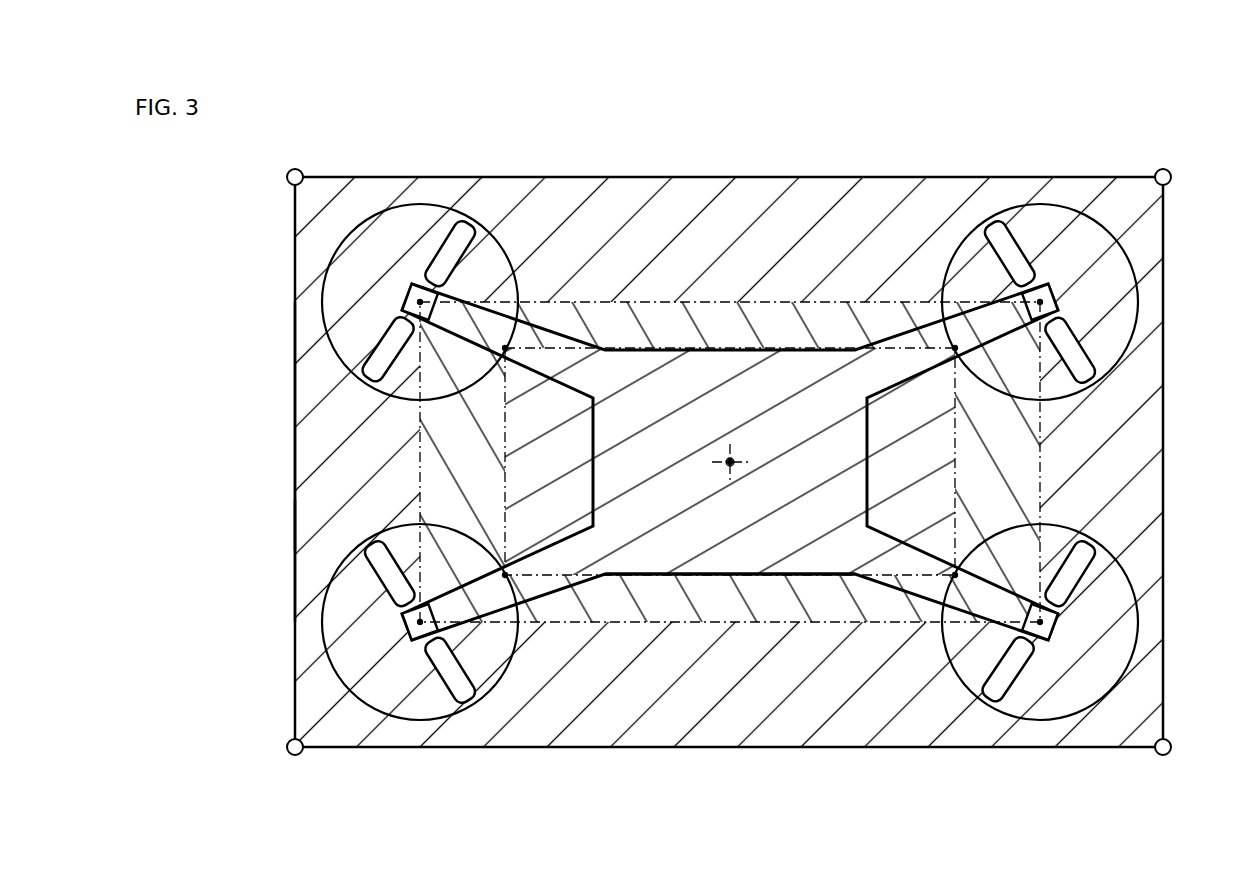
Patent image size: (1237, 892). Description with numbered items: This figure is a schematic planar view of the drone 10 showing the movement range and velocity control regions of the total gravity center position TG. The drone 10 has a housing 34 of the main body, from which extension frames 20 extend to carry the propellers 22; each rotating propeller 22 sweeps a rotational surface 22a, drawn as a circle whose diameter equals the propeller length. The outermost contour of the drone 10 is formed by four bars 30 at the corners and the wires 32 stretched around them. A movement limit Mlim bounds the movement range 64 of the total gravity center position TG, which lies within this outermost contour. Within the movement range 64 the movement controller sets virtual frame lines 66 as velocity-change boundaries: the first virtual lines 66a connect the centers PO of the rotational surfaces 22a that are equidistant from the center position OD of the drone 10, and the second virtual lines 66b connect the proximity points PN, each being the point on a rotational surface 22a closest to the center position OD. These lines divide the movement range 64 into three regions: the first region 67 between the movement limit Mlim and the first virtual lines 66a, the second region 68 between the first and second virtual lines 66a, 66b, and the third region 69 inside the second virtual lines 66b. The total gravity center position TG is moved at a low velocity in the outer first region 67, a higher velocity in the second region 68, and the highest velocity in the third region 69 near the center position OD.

The drone 10 is at (1087, 170).
The extension frame 20 is at (913, 595).
The propeller 22 is at (430, 256).
The rotational surface 22a is at (323, 263).
The bar 30 is at (286, 177).
The wire 32 is at (294, 391).
The housing 34 is at (732, 576).
The movement range 64 is at (632, 190).
The virtual frame line 66 is at (730, 217).
The first virtual line 66a is at (797, 300).
The second virtual line 66b is at (728, 300).
The first region 67 is at (712, 727).
The second region 68 is at (663, 600).
The third region 69 is at (653, 550).
The center of rotational surface PO is at (418, 300).
The proximity point PN is at (508, 352).
The center position OD is at (727, 460).
The total gravity center position TG is at (733, 464).
The movement limit Mlim is at (295, 525).